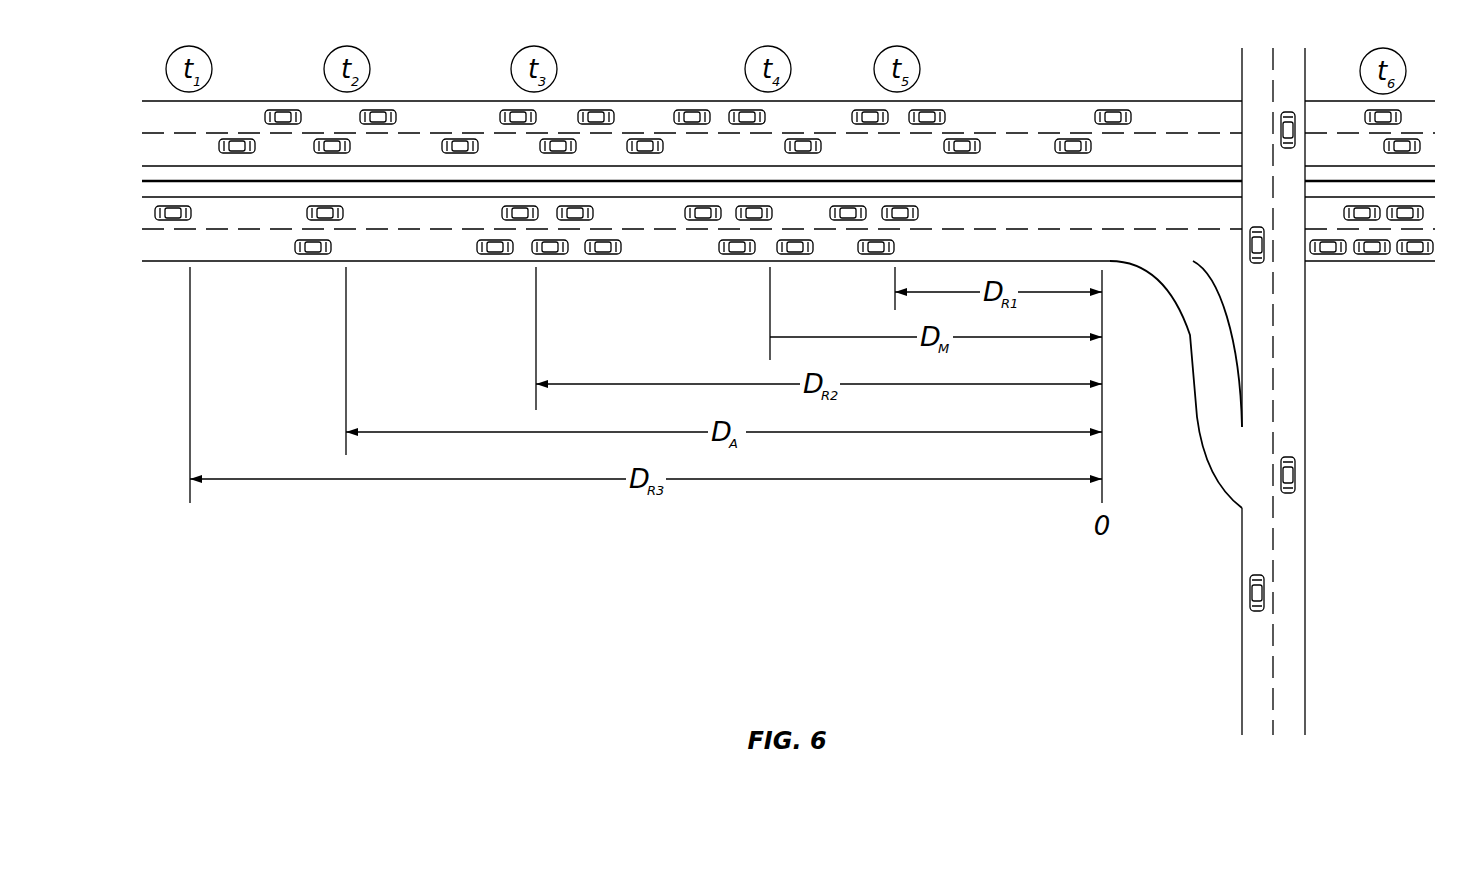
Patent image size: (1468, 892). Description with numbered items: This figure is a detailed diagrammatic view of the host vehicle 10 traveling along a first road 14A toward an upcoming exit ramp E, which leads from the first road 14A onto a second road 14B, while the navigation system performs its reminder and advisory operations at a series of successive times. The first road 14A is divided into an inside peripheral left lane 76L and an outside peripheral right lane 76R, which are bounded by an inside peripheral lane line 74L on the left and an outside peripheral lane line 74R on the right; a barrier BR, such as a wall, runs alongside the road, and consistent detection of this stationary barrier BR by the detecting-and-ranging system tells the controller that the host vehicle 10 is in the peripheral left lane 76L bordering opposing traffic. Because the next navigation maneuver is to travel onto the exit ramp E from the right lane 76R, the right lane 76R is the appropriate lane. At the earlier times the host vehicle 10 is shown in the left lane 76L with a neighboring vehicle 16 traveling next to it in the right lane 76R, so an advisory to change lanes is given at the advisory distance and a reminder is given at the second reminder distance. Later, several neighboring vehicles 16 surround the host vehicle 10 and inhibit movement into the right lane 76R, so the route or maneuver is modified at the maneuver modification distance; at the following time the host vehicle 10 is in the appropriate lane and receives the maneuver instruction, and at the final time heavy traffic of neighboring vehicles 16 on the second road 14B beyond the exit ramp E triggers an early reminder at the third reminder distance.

The host vehicle 10 is at (517, 225).
The neighboring vehicle 16 is at (864, 230).
The inside peripheral lane line 74L is at (273, 197).
The inside peripheral lane 76L is at (282, 207).
The outside peripheral lane line 74R is at (235, 262).
The outside peripheral lane 76R is at (273, 250).
The barrier BR is at (212, 178).
The first road 14A is at (166, 266).
The second road 14B is at (1239, 666).
The exit ramp E is at (1195, 421).